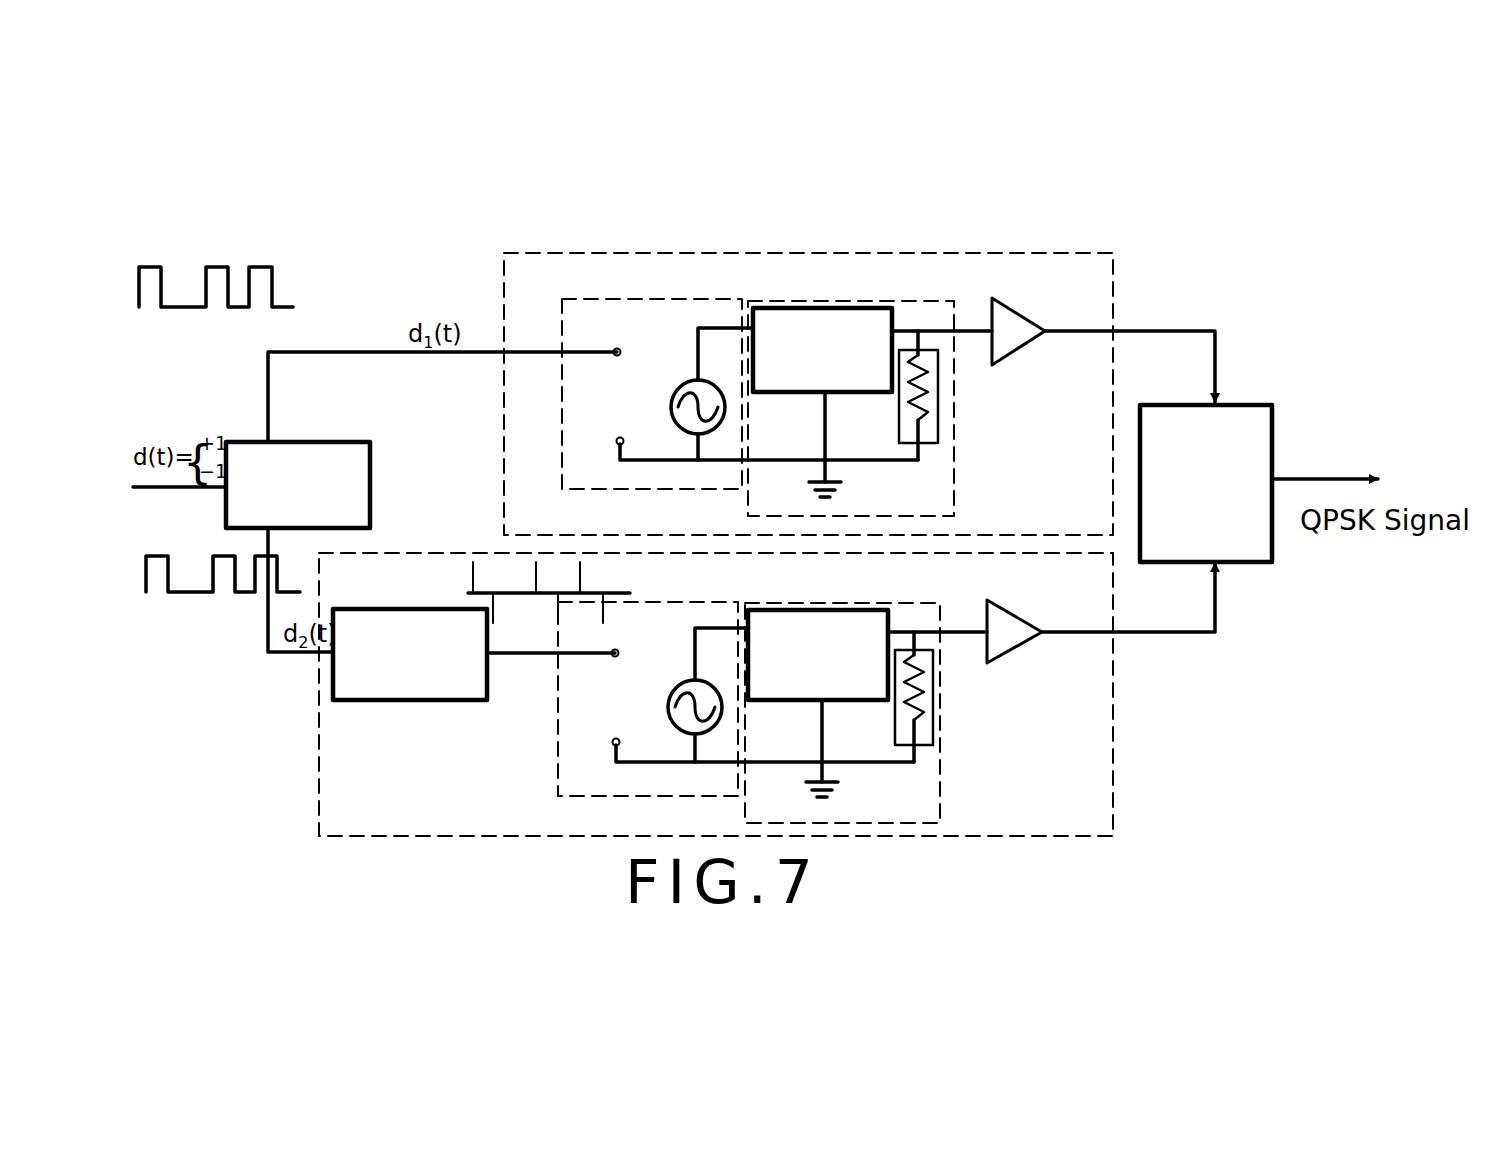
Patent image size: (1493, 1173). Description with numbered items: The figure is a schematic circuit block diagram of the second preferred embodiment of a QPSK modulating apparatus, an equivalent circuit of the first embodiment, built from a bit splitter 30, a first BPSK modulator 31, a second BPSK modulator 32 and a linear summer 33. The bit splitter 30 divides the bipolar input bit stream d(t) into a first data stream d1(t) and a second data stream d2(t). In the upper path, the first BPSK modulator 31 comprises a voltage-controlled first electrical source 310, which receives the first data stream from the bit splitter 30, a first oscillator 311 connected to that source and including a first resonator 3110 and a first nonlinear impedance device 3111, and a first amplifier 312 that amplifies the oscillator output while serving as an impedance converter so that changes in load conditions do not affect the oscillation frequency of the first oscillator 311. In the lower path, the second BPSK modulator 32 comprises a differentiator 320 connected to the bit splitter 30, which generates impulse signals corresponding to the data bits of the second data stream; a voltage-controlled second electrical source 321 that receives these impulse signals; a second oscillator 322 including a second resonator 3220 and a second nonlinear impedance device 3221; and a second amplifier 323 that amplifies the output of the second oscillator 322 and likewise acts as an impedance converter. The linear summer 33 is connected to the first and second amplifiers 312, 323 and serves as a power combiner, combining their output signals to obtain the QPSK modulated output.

The bit splitter 30 is at (340, 450).
The first BPSK modulator 31 is at (970, 262).
The first electrical source 310 is at (678, 328).
The first oscillator 311 is at (895, 300).
The first resonator 3110 is at (800, 384).
The first nonlinear impedance device 3111 is at (935, 407).
The first amplifier 312 is at (1012, 320).
The second BPSK modulator 32 is at (1082, 743).
The differentiator 320 is at (433, 678).
The second electrical source 321 is at (672, 640).
The second oscillator 322 is at (912, 625).
The second resonator 3220 is at (805, 686).
The second nonlinear impedance device 3221 is at (933, 722).
The second amplifier 323 is at (1012, 630).
The linear summer 33 is at (1186, 421).